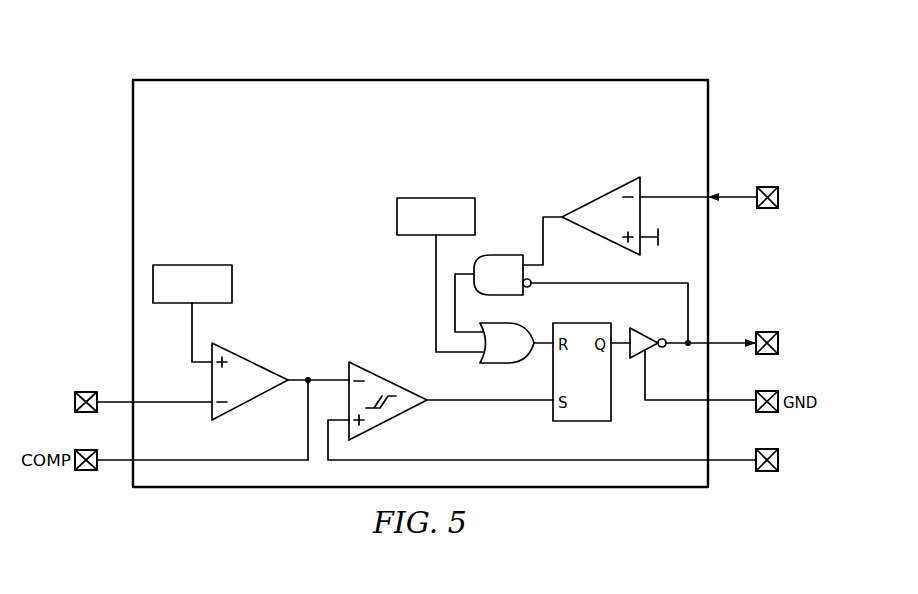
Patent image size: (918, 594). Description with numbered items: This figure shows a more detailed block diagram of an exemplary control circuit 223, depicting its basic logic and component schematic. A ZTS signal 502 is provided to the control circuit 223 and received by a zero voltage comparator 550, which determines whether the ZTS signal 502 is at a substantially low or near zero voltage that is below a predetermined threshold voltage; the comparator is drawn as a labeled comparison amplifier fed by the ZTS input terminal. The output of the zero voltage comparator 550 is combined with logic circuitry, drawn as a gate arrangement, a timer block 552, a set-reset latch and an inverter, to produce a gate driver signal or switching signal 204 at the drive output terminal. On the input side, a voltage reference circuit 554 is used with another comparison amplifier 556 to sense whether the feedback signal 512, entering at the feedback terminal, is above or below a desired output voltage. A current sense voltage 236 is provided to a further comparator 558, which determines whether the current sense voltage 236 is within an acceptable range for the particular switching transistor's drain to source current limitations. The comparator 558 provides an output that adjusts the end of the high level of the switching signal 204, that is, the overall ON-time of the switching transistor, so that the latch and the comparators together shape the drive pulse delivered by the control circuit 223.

The control circuit 223 is at (516, 76).
The voltage reference circuit 554 is at (188, 263).
The comparison amplifier 556 is at (252, 359).
The feedback signal 512 is at (113, 393).
The comparator 558 is at (392, 379).
The timer 552 is at (397, 216).
The zero voltage comparator 550 is at (600, 192).
The ZTS signal 502 is at (732, 194).
The switching signal 204 is at (728, 338).
The current sense voltage 236 is at (727, 462).